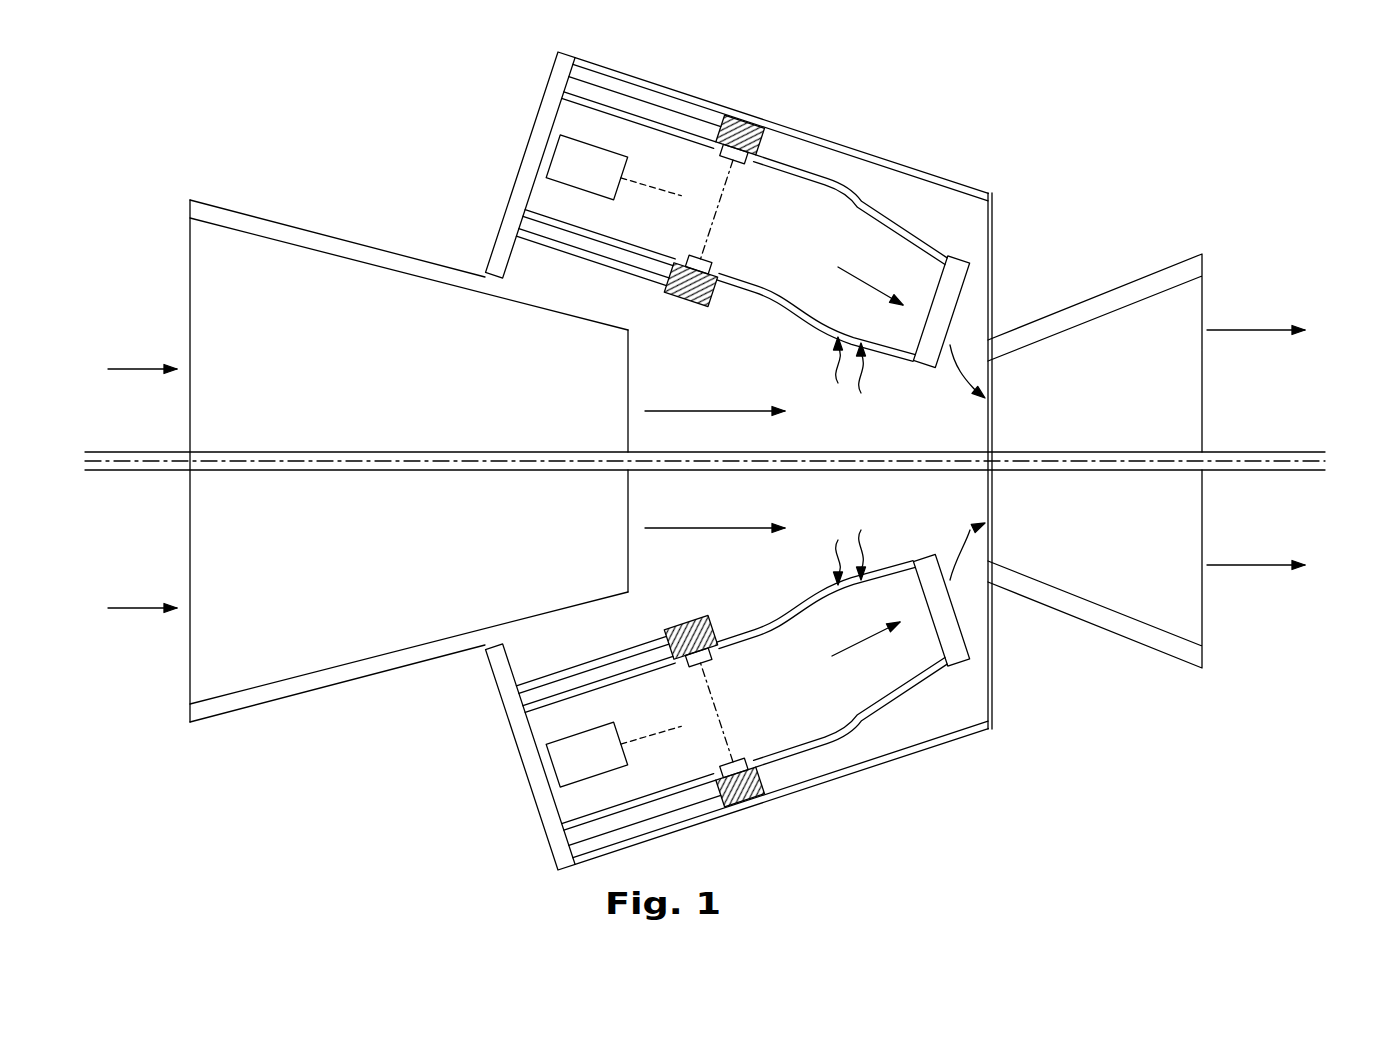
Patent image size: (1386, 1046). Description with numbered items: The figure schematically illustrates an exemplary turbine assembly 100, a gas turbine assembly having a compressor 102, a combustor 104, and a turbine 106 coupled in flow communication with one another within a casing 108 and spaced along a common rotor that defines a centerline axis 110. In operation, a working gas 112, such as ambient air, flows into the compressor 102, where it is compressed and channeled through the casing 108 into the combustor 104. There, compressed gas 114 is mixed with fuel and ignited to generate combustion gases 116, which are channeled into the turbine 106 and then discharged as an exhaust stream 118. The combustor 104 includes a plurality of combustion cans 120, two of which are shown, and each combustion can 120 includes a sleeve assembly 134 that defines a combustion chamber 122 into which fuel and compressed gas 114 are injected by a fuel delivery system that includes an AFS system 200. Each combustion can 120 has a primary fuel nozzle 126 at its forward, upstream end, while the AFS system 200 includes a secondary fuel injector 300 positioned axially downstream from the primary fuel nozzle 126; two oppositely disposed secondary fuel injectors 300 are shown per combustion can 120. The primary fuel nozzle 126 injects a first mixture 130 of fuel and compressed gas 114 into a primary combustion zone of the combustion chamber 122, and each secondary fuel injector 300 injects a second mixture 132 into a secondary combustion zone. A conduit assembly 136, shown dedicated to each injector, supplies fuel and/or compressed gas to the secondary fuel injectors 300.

The turbine assembly 100 is at (270, 147).
The compressor 102 is at (313, 652).
The combustor 104 is at (915, 715).
The turbine 106 is at (1135, 585).
The casing 108 is at (1092, 292).
The centerline axis 110 is at (1305, 462).
The working gas 112 is at (135, 368).
The compressed gas 114 is at (833, 375).
The combustion gases 116 is at (862, 285).
The exhaust stream 118 is at (1245, 329).
The combustion can 120 is at (522, 85).
The combustion chamber 122 is at (765, 233).
The primary fuel nozzle 126 is at (578, 168).
The first mixture 130 is at (633, 187).
The second mixture 132 is at (733, 172).
The sleeve assembly 134 is at (877, 225).
The conduit assembly 136 is at (623, 76).
The AFS system 200 is at (697, 100).
The secondary fuel injector 300 is at (757, 112).